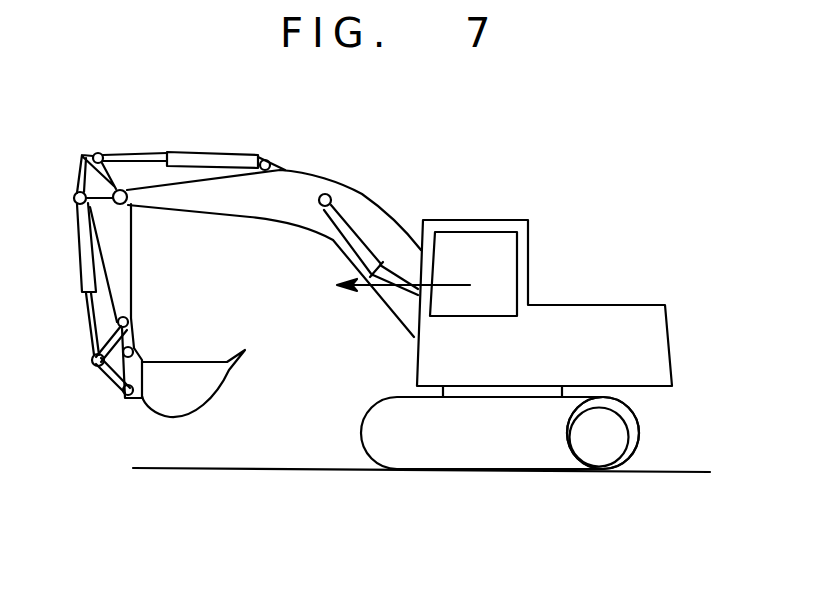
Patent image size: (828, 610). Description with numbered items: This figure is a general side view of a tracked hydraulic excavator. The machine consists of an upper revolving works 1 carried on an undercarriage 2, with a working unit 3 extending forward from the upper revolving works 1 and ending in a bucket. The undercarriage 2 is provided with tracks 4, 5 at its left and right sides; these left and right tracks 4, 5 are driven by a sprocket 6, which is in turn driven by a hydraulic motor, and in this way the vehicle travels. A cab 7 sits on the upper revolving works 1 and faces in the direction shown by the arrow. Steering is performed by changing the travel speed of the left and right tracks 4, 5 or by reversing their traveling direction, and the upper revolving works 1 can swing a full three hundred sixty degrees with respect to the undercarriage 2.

The upper revolving works 1 is at (562, 313).
The undercarriage 2 is at (485, 458).
The working unit 3 is at (130, 260).
The track 4 is at (640, 438).
The track 5 is at (603, 433).
The sprocket 6 is at (597, 467).
The cab 7 is at (477, 245).